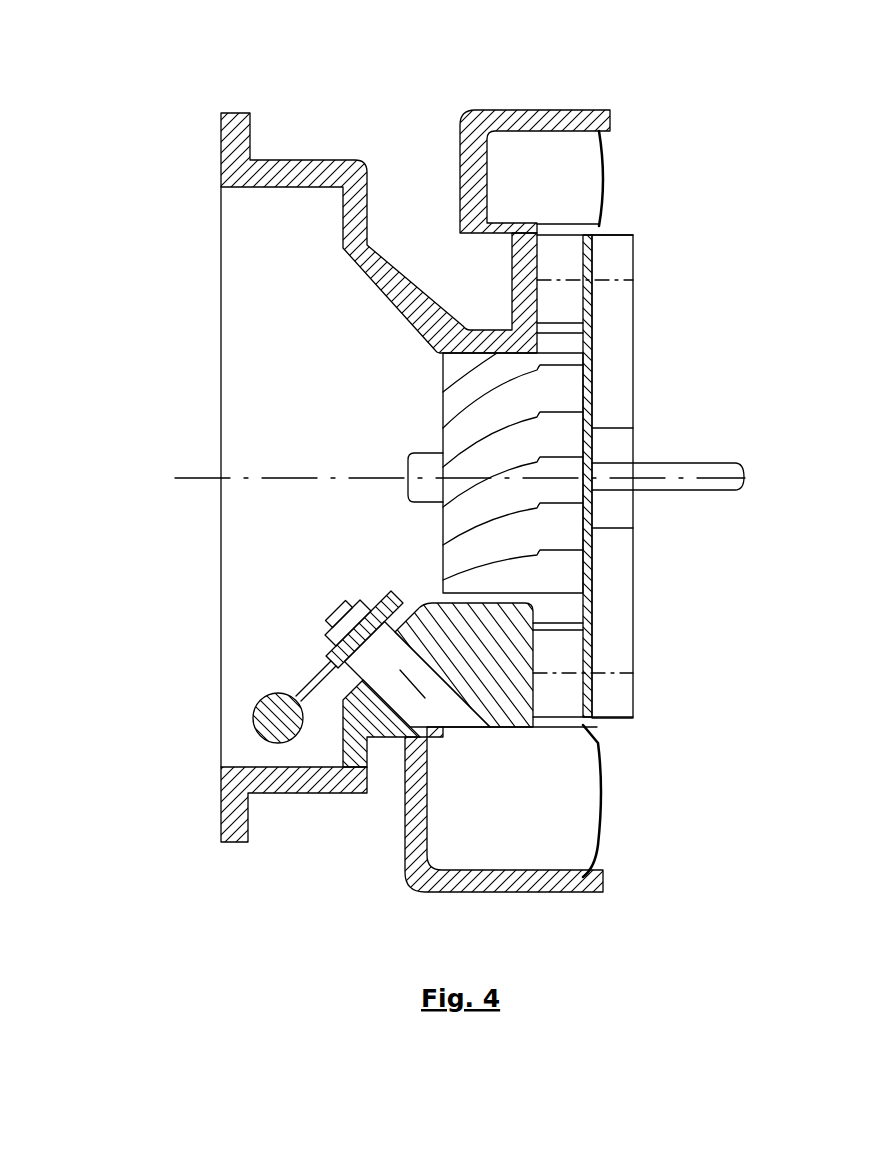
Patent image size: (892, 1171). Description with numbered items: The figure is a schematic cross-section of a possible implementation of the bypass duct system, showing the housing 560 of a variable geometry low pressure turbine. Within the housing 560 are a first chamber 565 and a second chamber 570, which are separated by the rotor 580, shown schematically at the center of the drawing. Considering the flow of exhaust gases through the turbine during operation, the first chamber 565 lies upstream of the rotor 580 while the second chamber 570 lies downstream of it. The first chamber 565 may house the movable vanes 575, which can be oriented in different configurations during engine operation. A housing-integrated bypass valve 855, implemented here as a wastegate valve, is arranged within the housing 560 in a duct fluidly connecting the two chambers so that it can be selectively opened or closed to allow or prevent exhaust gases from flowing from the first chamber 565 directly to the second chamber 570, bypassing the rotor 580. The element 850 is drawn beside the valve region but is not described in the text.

The housing 560 is at (472, 120).
The first chamber 565 is at (520, 785).
The second chamber 570 is at (260, 270).
The movable vanes 575 is at (617, 268).
The rotor 580 is at (555, 533).
The bolt 850 is at (345, 635).
The housing-integrated bypass valve 855 is at (396, 728).